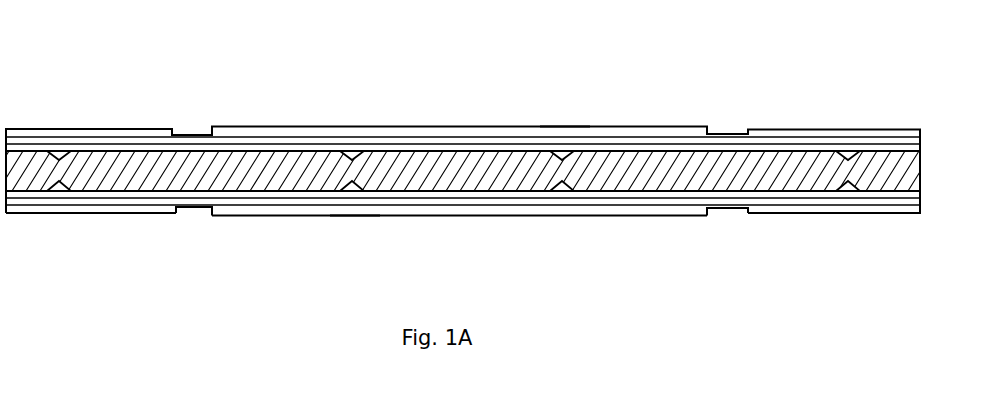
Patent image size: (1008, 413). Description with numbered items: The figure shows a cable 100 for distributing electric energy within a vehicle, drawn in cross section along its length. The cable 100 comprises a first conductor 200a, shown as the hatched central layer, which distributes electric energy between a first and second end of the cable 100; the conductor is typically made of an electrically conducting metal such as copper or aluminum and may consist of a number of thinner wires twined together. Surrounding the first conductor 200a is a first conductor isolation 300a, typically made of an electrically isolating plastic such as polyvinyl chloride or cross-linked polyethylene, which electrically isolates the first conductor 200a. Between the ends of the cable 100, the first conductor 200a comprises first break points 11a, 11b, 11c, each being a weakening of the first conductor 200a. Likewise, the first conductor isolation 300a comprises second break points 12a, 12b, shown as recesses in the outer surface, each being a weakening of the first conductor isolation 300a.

The cable 100 is at (445, 125).
The first conductor 200a is at (143, 170).
The first conductor isolation 300a is at (261, 125).
The first break point 11a is at (353, 223).
The first break point 11b is at (563, 125).
The first break point 11c is at (849, 221).
The second break point 12a is at (193, 223).
The second break point 12b is at (729, 220).